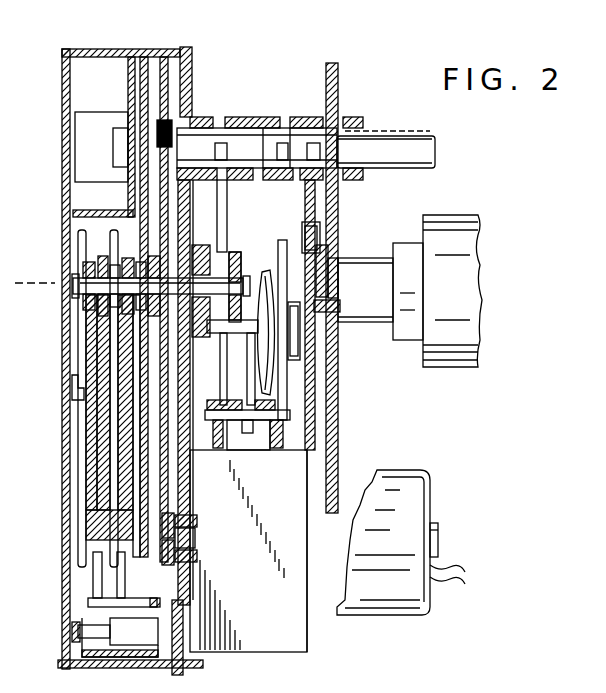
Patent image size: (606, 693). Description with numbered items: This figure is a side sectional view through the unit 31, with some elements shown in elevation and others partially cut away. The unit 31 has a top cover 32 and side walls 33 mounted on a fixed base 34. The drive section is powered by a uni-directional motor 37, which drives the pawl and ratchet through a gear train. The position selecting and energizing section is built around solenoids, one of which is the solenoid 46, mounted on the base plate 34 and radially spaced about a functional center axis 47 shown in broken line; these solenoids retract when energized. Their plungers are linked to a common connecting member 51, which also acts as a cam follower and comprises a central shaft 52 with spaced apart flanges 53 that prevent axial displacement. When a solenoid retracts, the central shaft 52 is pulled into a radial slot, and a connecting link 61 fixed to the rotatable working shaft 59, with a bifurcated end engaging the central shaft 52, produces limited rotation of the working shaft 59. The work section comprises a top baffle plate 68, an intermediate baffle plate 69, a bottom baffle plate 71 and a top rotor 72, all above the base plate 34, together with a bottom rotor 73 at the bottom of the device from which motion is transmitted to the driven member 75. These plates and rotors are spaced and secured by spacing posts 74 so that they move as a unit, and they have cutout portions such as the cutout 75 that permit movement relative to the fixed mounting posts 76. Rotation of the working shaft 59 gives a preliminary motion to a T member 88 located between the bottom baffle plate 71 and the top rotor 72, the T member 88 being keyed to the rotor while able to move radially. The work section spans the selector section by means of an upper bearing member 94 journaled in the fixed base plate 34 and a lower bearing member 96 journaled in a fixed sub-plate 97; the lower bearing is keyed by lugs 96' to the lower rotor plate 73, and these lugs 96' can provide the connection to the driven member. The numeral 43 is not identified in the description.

The unit 31 is at (100, 44).
The top cover 32 is at (63, 157).
The side walls 33 is at (149, 62).
The fixed base 34 is at (189, 88).
The uni-directional motor 37 is at (413, 508).
The box wall 43 is at (312, 625).
The solenoid 46 is at (270, 626).
The functional center axis 47 is at (50, 283).
The common connecting member 51 is at (264, 282).
The central shaft 52 is at (238, 330).
The flanges 53 is at (280, 375).
The rotatable working shaft 59 is at (83, 273).
The connecting link 61 is at (233, 250).
The top baffle plate 68 is at (80, 540).
The intermediate baffle plate 69 is at (108, 562).
The bottom baffle plate 71 is at (133, 555).
The top rotor 72 is at (165, 62).
The bottom rotor 73 is at (328, 98).
The spacing posts 74 is at (75, 406).
The cutout portions 75 is at (440, 230).
The mounting posts 76 is at (245, 148).
The T member 88 is at (170, 390).
The upper bearing member 94 is at (201, 248).
The lower bearing member 96 is at (286, 238).
The lugs 96' is at (343, 264).
The fixed sub-plate 97 is at (312, 427).